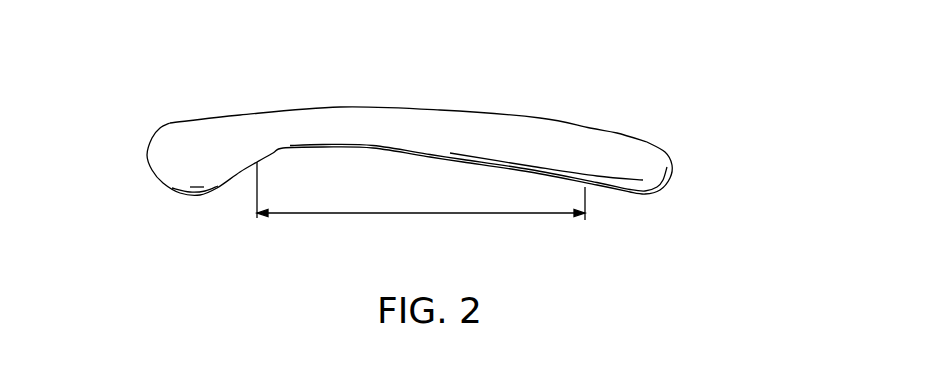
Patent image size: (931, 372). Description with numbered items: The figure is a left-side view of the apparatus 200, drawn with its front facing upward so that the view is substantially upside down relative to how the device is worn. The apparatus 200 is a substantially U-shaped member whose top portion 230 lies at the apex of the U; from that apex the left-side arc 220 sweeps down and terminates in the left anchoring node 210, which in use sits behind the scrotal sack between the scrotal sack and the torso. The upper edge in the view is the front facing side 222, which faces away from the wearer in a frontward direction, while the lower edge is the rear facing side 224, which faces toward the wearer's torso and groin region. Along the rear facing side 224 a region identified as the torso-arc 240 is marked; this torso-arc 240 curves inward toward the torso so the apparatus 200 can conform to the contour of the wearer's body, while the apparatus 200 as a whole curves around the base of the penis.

The apparatus 200 is at (431, 135).
The left anchoring node 210 is at (183, 152).
The left-side arc 220 is at (502, 138).
The front facing side 222 is at (337, 108).
The rear facing side 224 is at (600, 187).
The top portion 230 is at (673, 160).
The torso-arc 240 is at (347, 213).